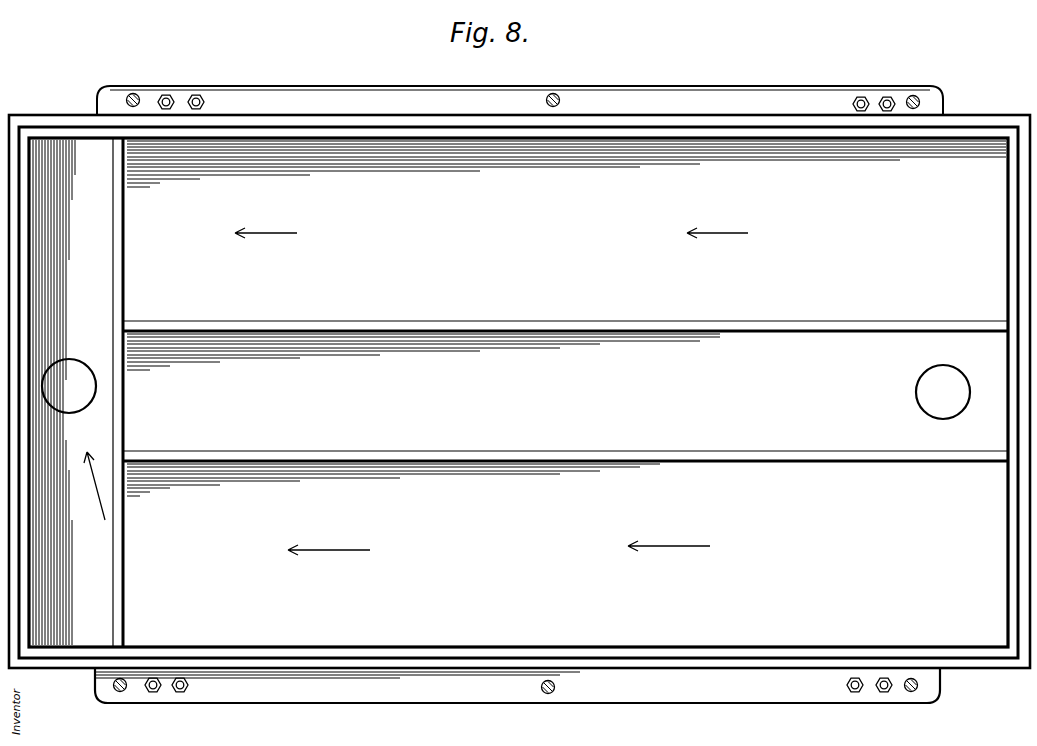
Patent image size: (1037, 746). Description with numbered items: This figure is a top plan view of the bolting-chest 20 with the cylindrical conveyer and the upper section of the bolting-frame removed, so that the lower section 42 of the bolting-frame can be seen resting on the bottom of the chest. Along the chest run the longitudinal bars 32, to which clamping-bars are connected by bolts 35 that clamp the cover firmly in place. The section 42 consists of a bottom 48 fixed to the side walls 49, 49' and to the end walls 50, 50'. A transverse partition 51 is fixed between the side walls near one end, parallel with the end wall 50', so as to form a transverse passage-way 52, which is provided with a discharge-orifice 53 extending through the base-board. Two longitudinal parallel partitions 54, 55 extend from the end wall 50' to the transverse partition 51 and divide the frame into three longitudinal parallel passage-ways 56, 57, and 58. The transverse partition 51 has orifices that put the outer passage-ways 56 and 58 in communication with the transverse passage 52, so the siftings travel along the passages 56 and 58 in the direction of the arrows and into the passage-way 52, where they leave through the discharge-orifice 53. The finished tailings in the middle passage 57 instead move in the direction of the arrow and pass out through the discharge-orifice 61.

The bolting-chest 20 is at (348, 122).
The longitudinal bars 32 is at (519, 394).
The bolts 35 is at (136, 94).
The bolting-frame section 42 is at (566, 210).
The bottom 48 is at (574, 569).
The side wall 49 is at (566, 628).
The side wall 49' is at (566, 157).
The end wall 50 is at (64, 483).
The end wall 50' is at (990, 392).
The transverse partition 51 is at (100, 250).
The passage-way 52 is at (55, 392).
The discharge-orifice 53 is at (69, 386).
The longitudinal partition 54 is at (638, 452).
The longitudinal partition 55 is at (633, 322).
The passage-way 56 is at (751, 570).
The middle passage 57 is at (760, 380).
The passage-way 58 is at (600, 195).
The discharge-orifice 61 is at (943, 392).